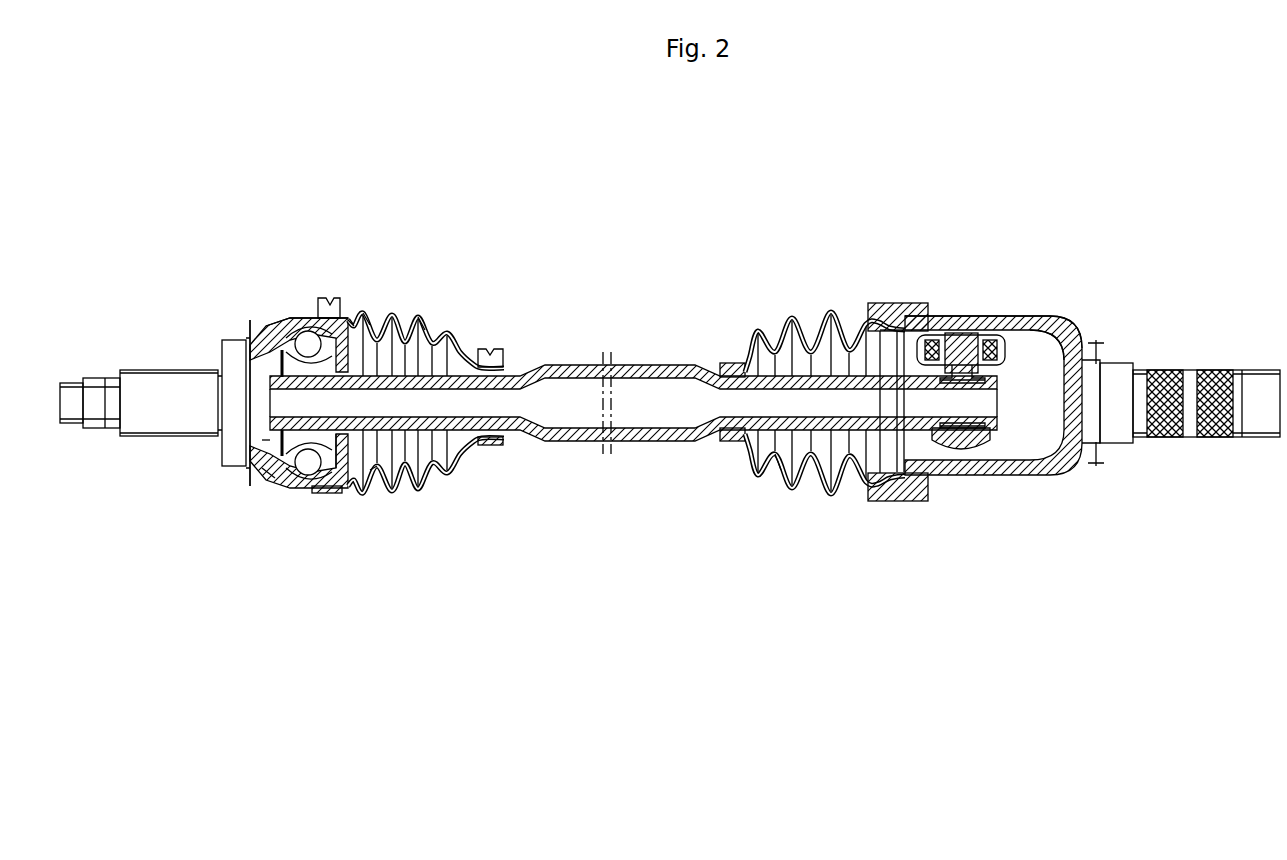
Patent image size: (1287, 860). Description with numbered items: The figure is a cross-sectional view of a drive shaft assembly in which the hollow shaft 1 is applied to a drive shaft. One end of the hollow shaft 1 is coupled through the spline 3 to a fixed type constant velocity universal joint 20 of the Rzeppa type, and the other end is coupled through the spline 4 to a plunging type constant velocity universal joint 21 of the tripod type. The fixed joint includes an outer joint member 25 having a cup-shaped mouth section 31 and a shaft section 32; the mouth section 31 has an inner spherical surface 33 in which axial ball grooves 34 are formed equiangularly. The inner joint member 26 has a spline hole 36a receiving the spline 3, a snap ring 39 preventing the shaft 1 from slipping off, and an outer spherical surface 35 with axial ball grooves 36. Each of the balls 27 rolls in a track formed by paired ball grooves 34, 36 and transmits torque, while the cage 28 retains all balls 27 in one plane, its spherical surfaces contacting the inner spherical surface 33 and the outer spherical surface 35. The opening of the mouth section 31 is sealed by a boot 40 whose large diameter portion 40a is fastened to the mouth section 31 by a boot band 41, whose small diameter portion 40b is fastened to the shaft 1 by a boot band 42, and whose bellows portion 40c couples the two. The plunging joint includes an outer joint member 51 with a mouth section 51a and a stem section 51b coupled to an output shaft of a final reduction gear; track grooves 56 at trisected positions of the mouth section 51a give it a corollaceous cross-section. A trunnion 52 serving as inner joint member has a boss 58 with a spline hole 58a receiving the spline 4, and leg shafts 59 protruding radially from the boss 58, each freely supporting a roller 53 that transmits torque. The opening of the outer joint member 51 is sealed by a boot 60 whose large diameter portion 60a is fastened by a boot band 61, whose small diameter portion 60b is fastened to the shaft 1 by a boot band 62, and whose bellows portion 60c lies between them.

The hollow shaft 1 is at (630, 364).
The spline 3 is at (272, 472).
The spline 4 is at (955, 450).
The fixed type constant velocity universal joint 20 is at (308, 235).
The plunging type constant velocity universal joint 21 is at (1000, 246).
The outer joint member 25 is at (282, 308).
The inner joint member 26 is at (374, 490).
The balls 27 is at (304, 332).
The cage 28 is at (342, 478).
The mouth section 31 is at (262, 482).
The shaft section 32 is at (158, 382).
The inner spherical surface 33 is at (286, 335).
The ball grooves 34 is at (352, 316).
The outer spherical surface 35 is at (305, 470).
The ball grooves 36 is at (372, 322).
The spline hole 36a is at (268, 392).
The snap ring 39 is at (270, 440).
The boot 40 is at (415, 486).
The large diameter portion 40a is at (324, 494).
The small diameter portion 40b is at (497, 446).
The bellows portion 40c is at (434, 316).
The boot band 41 is at (328, 298).
The boot band 42 is at (495, 349).
The outer joint member 51 is at (1015, 480).
The mouth section 51a is at (1062, 474).
The stem section 51b is at (1216, 438).
The trunnion 52 is at (965, 338).
The rollers 53 is at (1030, 338).
The track grooves 56 is at (1042, 318).
The boss 58 is at (978, 452).
The spline hole 58a is at (966, 388).
The leg shafts 59 is at (950, 336).
The boot 60 is at (832, 497).
The large diameter portion 60a is at (901, 304).
The small diameter portion 60b is at (733, 363).
The bellows portion 60c is at (785, 480).
The boot band 61 is at (912, 502).
The boot band 62 is at (738, 442).